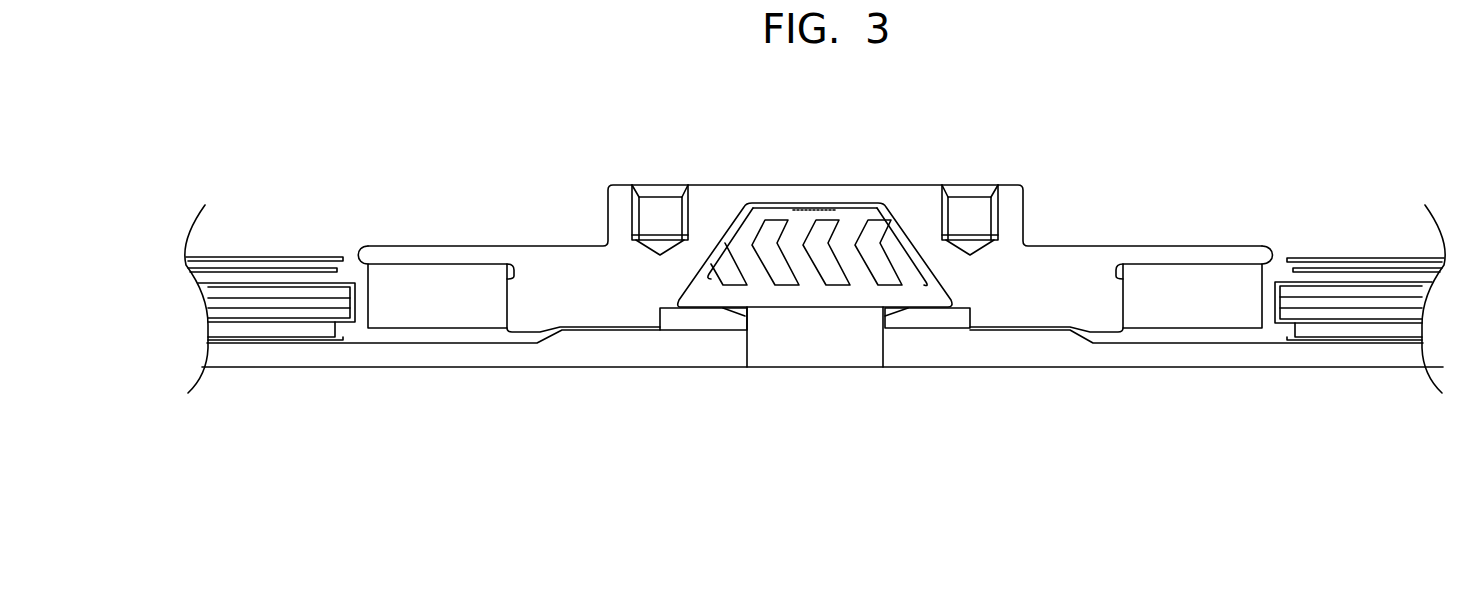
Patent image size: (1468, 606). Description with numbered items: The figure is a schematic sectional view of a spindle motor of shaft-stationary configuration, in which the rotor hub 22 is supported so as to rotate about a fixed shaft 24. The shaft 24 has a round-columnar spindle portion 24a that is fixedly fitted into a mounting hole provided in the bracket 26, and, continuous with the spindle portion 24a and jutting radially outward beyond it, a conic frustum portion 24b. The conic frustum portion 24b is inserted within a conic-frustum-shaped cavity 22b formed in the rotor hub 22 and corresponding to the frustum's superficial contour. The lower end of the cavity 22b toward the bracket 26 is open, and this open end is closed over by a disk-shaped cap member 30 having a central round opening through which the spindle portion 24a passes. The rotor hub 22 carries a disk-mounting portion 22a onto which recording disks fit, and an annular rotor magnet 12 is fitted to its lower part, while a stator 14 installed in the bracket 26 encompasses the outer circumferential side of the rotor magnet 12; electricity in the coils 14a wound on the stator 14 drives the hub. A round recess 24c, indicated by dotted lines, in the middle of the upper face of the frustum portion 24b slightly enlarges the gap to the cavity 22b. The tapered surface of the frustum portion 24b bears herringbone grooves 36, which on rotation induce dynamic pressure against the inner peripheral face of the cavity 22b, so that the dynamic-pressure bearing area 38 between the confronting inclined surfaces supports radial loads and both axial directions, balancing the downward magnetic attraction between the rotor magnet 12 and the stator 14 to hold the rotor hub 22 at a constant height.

The rotor magnet 12 is at (405, 308).
The stator 14 is at (1325, 313).
The coils 14a is at (267, 273).
The rotor hub 22 is at (718, 197).
The disk-mounting portion 22a is at (438, 252).
The conic-frustum-shaped cavity 22b is at (707, 282).
The shaft 24 is at (828, 350).
The spindle portion 24a is at (772, 340).
The conic frustum portion 24b is at (873, 212).
The round recess 24c is at (815, 207).
The bracket 26 is at (1170, 352).
The cap member 30 is at (682, 316).
The herringbone grooves 36 is at (878, 265).
The dynamic-pressure bearing area 38 is at (908, 260).